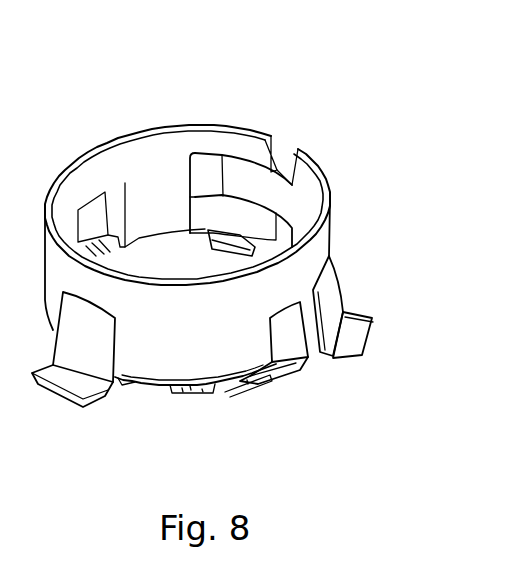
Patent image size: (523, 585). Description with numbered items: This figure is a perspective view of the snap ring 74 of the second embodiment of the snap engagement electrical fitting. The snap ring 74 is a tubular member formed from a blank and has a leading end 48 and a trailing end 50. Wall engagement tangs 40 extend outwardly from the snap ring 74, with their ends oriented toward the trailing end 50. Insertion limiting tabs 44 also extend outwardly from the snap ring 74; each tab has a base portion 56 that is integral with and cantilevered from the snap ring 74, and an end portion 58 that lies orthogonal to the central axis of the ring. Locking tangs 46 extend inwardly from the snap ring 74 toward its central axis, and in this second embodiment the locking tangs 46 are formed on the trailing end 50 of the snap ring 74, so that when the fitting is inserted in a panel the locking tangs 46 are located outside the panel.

The leading end 48 is at (174, 122).
The snap ring 74 is at (204, 333).
The insertion limiting tab 44 is at (96, 352).
The wall engagement tang 40 is at (308, 347).
The base portion 56 is at (332, 300).
The end portion 58 is at (355, 340).
The trailing end 50 is at (192, 388).
The locking tang 46 is at (227, 255).